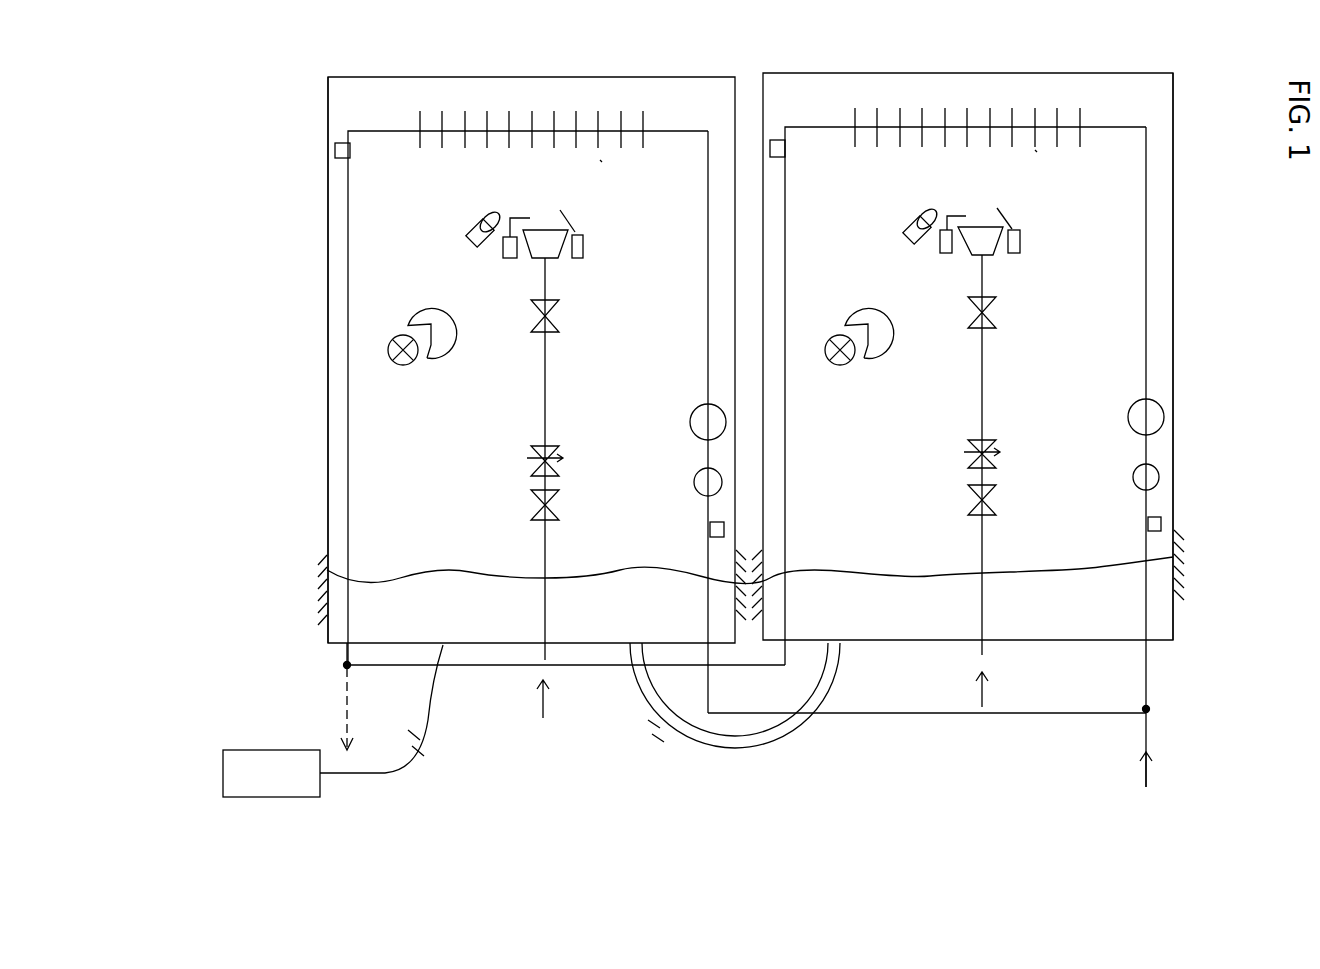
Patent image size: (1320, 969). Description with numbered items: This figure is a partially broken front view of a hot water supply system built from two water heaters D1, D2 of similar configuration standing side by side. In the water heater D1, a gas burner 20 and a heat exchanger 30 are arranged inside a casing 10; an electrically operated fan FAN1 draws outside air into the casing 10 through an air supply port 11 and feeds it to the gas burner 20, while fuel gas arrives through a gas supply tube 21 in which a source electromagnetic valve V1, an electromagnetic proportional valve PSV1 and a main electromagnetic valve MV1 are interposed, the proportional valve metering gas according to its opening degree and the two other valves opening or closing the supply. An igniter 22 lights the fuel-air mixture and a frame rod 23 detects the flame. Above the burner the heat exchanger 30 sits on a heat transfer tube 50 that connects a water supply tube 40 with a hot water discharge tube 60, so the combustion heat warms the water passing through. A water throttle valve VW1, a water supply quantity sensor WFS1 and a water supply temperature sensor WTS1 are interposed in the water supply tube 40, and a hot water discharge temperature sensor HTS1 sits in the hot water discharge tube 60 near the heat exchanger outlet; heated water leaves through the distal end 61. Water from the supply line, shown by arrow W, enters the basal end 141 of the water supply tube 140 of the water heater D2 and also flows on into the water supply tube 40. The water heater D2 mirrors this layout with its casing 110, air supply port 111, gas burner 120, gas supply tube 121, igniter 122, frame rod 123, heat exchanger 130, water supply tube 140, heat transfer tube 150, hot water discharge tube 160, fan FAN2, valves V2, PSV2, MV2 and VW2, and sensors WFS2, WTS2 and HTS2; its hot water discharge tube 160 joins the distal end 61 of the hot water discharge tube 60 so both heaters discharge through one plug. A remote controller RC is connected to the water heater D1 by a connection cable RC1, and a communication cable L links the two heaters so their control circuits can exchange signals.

The casing 10 is at (318, 418).
The air supply port 11 is at (323, 579).
The gas burner 20 is at (551, 203).
The gas supply tube 21 is at (546, 390).
The igniter 22 is at (478, 225).
The frame rod 23 is at (585, 248).
The heat exchanger 30 is at (621, 175).
The water supply tube 40 is at (708, 283).
The heat transfer tube 50 is at (477, 128).
The hot water discharge tube 60 is at (349, 260).
The distal end 61 is at (347, 695).
The casing 110 is at (1185, 266).
The air supply port 111 is at (1178, 558).
The gas burner 120 is at (988, 203).
The gas supply tube 121 is at (983, 387).
The igniter 122 is at (915, 222).
The frame rod 123 is at (1021, 246).
The heat exchanger 130 is at (1055, 165).
The water supply tube 140 is at (1173, 184).
The basal end 141 is at (1147, 730).
The heat transfer tube 150 is at (1023, 124).
The hot water discharge tube 160 is at (786, 242).
The water heater D1 is at (571, 46).
The water heater D2 is at (899, 50).
The hot water discharge temperature sensor HTS1 is at (335, 149).
The hot water discharge temperature sensor HTS2 is at (777, 140).
The main electromagnetic valve MV1 is at (558, 322).
The main electromagnetic valve MV2 is at (995, 318).
The electromagnetic proportional valve PSV1 is at (552, 448).
The electromagnetic proportional valve PSV2 is at (988, 442).
The source electromagnetic valve V1 is at (553, 495).
The source electromagnetic valve V2 is at (989, 486).
The water throttle valve VW1 is at (694, 410).
The water throttle valve VW2 is at (1163, 410).
The water supply quantity sensor WFS1 is at (698, 474).
The water supply quantity sensor WFS2 is at (1158, 470).
The water supply temperature sensor WTS1 is at (710, 529).
The water supply temperature sensor WTS2 is at (1162, 522).
The electrically operated fan FAN1 is at (409, 403).
The electrically operated fan FAN2 is at (846, 401).
The remote controller RC is at (256, 750).
The connection cable RC1 is at (392, 782).
The water flow arrow W is at (1150, 777).
The communication cable L is at (666, 745).